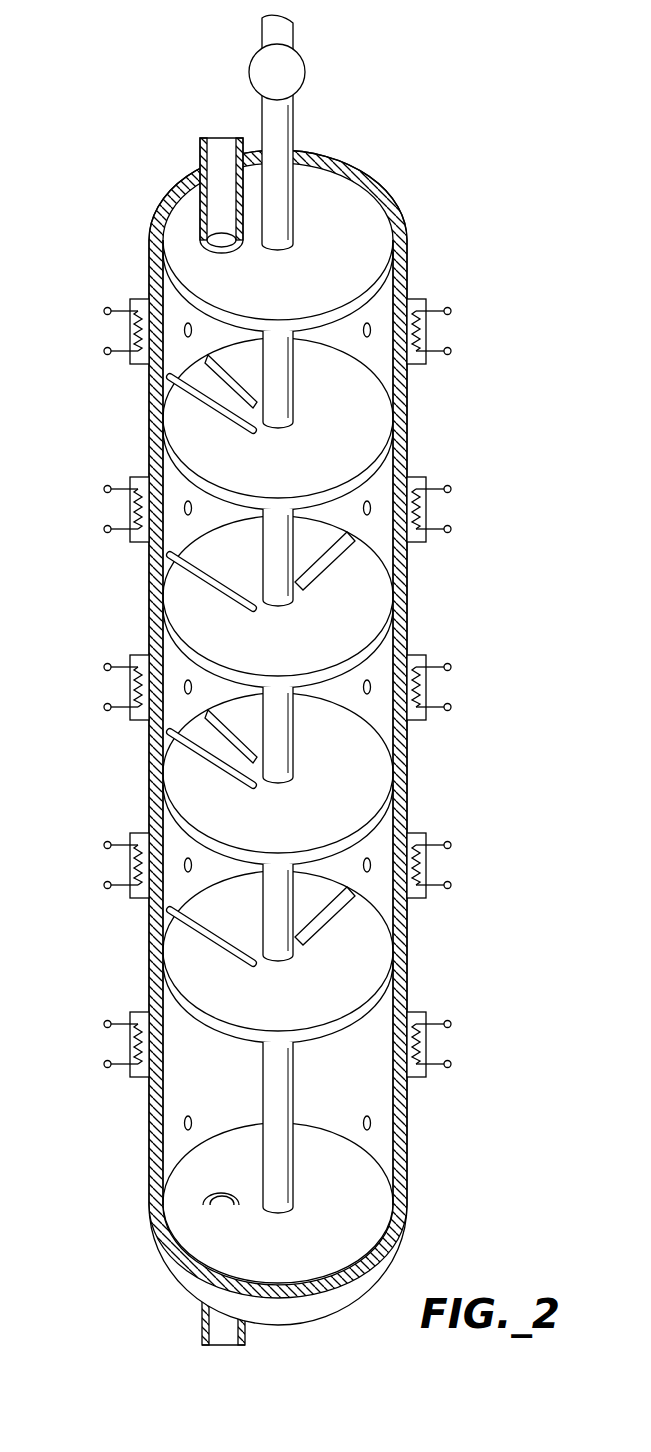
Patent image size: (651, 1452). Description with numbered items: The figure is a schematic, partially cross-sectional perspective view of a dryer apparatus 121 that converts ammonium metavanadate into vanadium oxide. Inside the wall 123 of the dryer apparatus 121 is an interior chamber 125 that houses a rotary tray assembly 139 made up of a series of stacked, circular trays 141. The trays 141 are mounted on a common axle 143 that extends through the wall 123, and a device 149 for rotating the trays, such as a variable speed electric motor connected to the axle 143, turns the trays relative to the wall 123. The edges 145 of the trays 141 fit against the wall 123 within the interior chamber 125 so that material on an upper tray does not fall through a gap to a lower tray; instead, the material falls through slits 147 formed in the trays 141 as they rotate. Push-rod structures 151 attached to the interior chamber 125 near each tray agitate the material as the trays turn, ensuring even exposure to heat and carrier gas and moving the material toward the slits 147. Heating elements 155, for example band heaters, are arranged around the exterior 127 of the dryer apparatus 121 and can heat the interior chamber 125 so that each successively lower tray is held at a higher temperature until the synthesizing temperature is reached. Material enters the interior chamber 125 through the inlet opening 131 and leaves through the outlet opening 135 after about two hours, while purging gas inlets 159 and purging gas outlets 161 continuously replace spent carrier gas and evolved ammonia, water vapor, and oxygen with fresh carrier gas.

The dryer apparatus 121 is at (496, 538).
The wall 123 is at (361, 207).
The interior chamber 125 is at (381, 295).
The exterior 127 is at (150, 412).
The inlet opening 131 is at (222, 163).
The outlet opening 135 is at (219, 1213).
The rotary tray assembly 139 is at (362, 165).
The trays 141 is at (360, 481).
The common axle 143 is at (282, 133).
The edges 145 is at (190, 468).
The slits 147 is at (352, 901).
The device for rotating the trays 149 is at (303, 63).
The push-rod structures 151 is at (193, 742).
The heating elements 155 is at (130, 328).
The purging gas inlets 159 is at (187, 516).
The purging gas outlets 161 is at (371, 692).